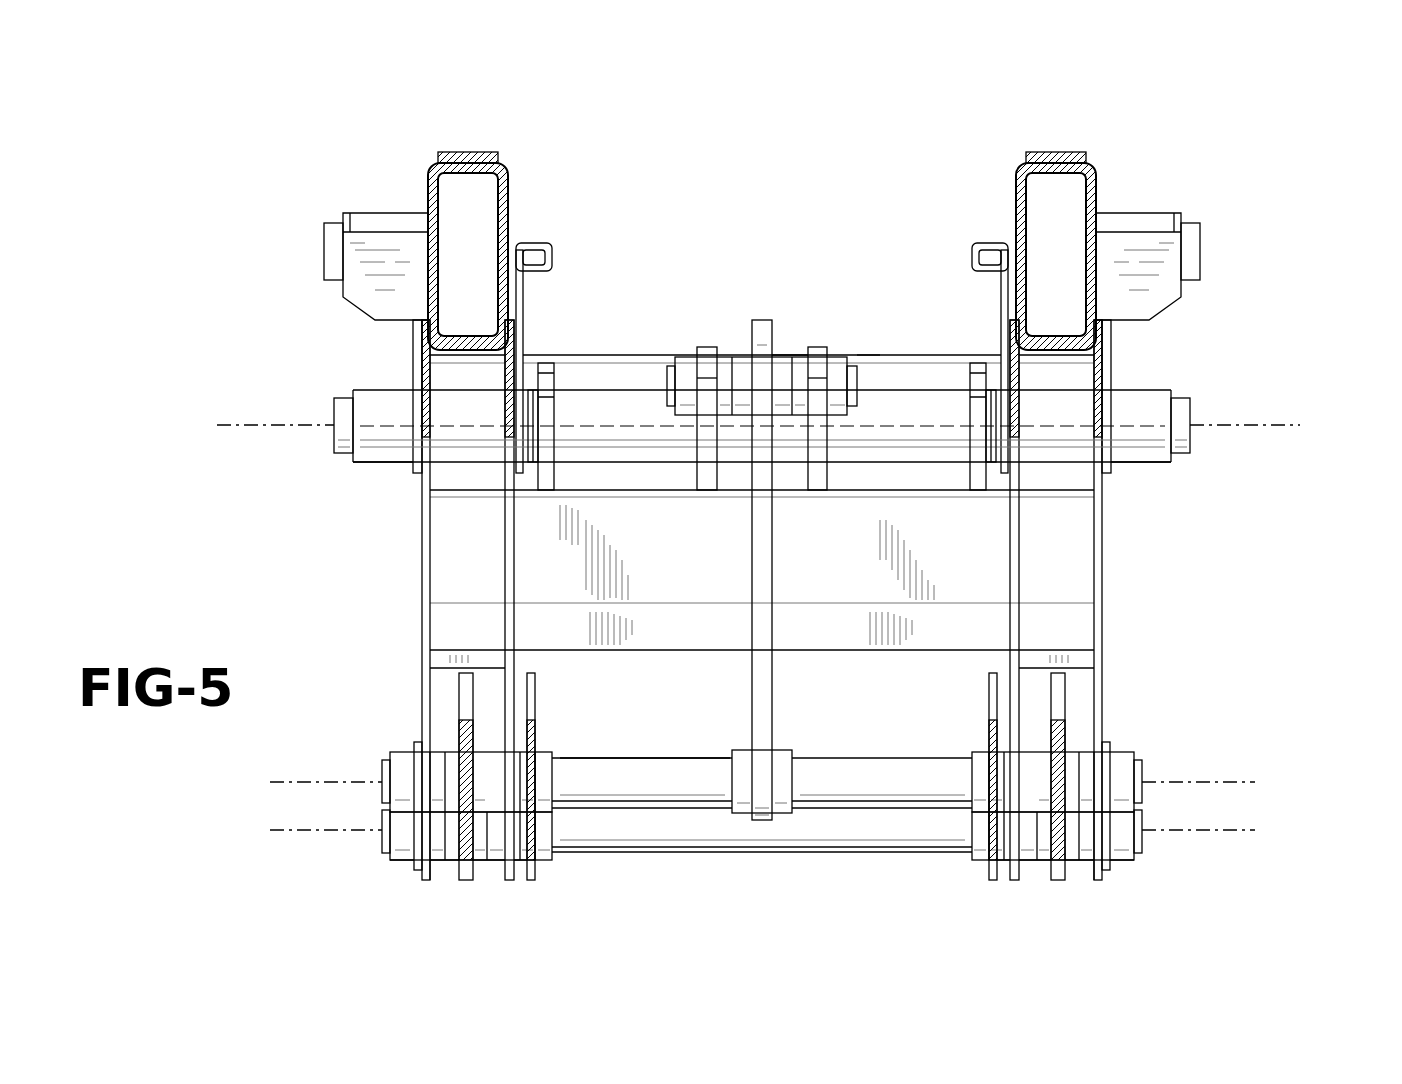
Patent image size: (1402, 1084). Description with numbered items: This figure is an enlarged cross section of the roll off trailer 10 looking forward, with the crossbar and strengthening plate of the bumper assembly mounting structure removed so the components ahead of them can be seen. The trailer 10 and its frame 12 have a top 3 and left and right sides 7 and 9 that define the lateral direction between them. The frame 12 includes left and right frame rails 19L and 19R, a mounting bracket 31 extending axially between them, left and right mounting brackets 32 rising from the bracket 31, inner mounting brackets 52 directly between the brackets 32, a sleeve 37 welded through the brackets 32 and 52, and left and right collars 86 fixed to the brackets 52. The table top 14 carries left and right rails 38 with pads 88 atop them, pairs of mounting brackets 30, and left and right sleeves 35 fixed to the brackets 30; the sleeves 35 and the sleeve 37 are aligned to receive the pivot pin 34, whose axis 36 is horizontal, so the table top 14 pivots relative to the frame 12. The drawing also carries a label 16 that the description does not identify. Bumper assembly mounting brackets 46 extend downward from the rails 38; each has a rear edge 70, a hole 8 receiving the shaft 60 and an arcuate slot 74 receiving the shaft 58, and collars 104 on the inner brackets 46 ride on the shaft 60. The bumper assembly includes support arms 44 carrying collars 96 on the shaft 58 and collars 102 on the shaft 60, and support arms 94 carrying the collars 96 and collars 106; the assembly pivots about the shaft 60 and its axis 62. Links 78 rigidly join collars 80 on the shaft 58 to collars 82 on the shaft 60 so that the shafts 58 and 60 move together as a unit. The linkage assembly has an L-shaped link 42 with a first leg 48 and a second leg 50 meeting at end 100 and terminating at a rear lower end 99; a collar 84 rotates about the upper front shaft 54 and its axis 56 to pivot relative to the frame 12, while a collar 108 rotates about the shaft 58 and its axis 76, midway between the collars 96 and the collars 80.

The top 3 is at (727, 134).
The left side 7 is at (209, 516).
The aperture or hole 8 is at (761, 870).
The right side 9 is at (1291, 556).
The roll off trailer 10 is at (1224, 157).
The trailer frame 12 is at (762, 600).
The table top 14 is at (426, 184).
The drive shaft 16 is at (777, 430).
The left frame rail 19L is at (420, 657).
The right frame rail 19R is at (1150, 600).
The mounting brackets 30 is at (523, 300).
The mounting bracket 31 is at (1062, 535).
The mounting brackets 32 is at (554, 418).
The pivot pin 34 is at (1182, 455).
The sleeves or collars 35 is at (378, 462).
The axis 36 is at (232, 425).
The sleeve 37 is at (672, 447).
The rails 38 is at (799, 229).
The link 42 is at (757, 532).
The support arms 44 is at (461, 694).
The bumper assembly mounting brackets 46 is at (762, 600).
The first leg 48 is at (757, 532).
The second leg 50 is at (757, 532).
The mounting brackets 52 is at (707, 346).
The upper front shaft 54 is at (870, 355).
The axis 56 is at (731, 357).
The lower rear shaft 58 is at (685, 773).
The shaft 60 is at (682, 835).
The axis 62 is at (272, 830).
The rear edge 70 is at (762, 600).
The slot 74 is at (761, 759).
The axis 76 is at (272, 782).
The links or linking plates 78 is at (418, 742).
The collars 80 is at (761, 818).
The collars 82 is at (400, 860).
The upper front collar 84 is at (781, 355).
The collars 86 is at (687, 355).
The pads 88 is at (470, 152).
The support arms 94 is at (535, 700).
The collars 96 is at (549, 752).
The rear lower end 99 is at (760, 822).
The back end 100 is at (755, 338).
The collars 102 is at (448, 862).
The collars 104 is at (492, 862).
The collars 106 is at (538, 872).
The lower rear collar 108 is at (792, 750).